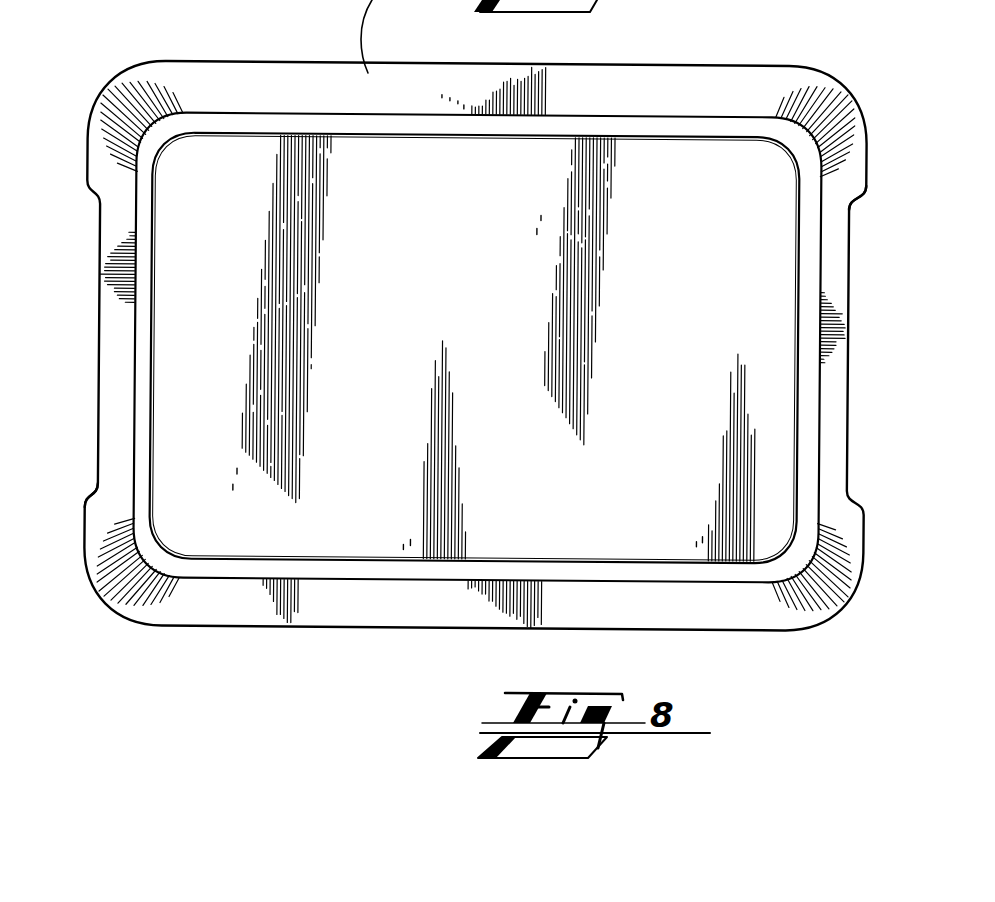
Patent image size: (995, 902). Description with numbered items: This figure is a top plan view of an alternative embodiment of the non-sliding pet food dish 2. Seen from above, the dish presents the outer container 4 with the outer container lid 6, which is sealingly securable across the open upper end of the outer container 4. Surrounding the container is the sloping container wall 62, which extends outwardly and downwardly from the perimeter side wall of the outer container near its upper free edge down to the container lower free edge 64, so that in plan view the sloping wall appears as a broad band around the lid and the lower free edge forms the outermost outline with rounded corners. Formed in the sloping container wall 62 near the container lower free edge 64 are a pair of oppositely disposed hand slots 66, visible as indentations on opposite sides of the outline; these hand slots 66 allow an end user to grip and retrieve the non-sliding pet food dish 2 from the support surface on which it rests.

The non-sliding pet food dish 2 is at (224, 677).
The outer container 4 is at (735, 63).
The outer container lid 6 is at (490, 268).
The sloping container wall 62 is at (113, 320).
The container lower free edge 64 is at (260, 63).
The hand slots 66 is at (857, 288).